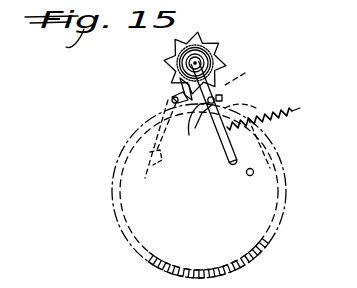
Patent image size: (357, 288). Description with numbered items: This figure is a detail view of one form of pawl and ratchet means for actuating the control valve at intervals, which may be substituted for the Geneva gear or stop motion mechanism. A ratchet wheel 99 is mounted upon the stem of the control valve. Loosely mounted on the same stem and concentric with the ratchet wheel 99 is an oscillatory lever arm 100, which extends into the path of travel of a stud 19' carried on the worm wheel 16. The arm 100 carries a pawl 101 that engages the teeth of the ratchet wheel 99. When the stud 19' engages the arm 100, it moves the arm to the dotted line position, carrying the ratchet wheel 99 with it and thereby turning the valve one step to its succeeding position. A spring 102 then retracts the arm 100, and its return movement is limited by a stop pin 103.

The worm wheel 16 is at (199, 191).
The ratchet wheel 99 is at (214, 46).
The oscillatory lever arm 100 is at (224, 111).
The pawl 101 is at (195, 129).
The spring 102 is at (278, 108).
The stop pin 103 is at (223, 98).
The stud 19' is at (282, 168).